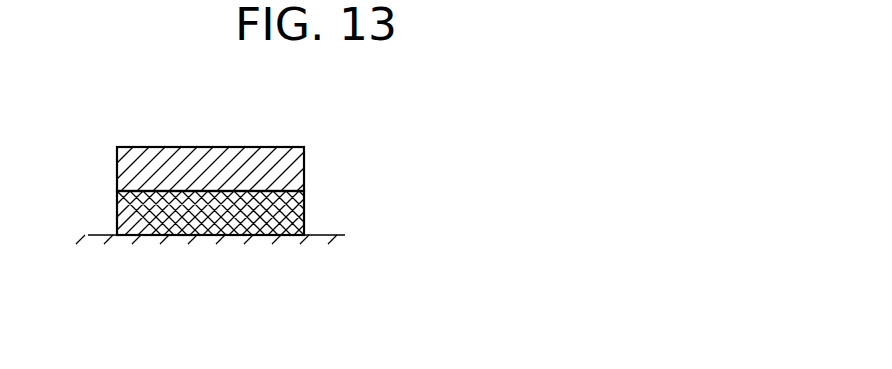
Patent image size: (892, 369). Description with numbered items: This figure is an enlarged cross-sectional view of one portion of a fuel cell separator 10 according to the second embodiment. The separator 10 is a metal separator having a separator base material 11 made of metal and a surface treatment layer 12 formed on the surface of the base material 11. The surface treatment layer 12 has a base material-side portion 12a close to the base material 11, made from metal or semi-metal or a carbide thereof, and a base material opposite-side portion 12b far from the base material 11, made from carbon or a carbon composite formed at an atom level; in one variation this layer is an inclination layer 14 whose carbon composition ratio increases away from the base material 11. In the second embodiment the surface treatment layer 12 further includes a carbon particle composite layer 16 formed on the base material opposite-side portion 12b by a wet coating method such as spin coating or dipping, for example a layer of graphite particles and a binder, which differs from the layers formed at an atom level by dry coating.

The separator 10 is at (411, 218).
The separator base material 11 is at (306, 240).
The surface treatment layer 12 is at (381, 218).
The base material-side portion 12a is at (160, 215).
The base material opposite-side portion 12b is at (227, 197).
The inclination layer 14 is at (214, 264).
The carbon particle composite layer 16 is at (102, 168).